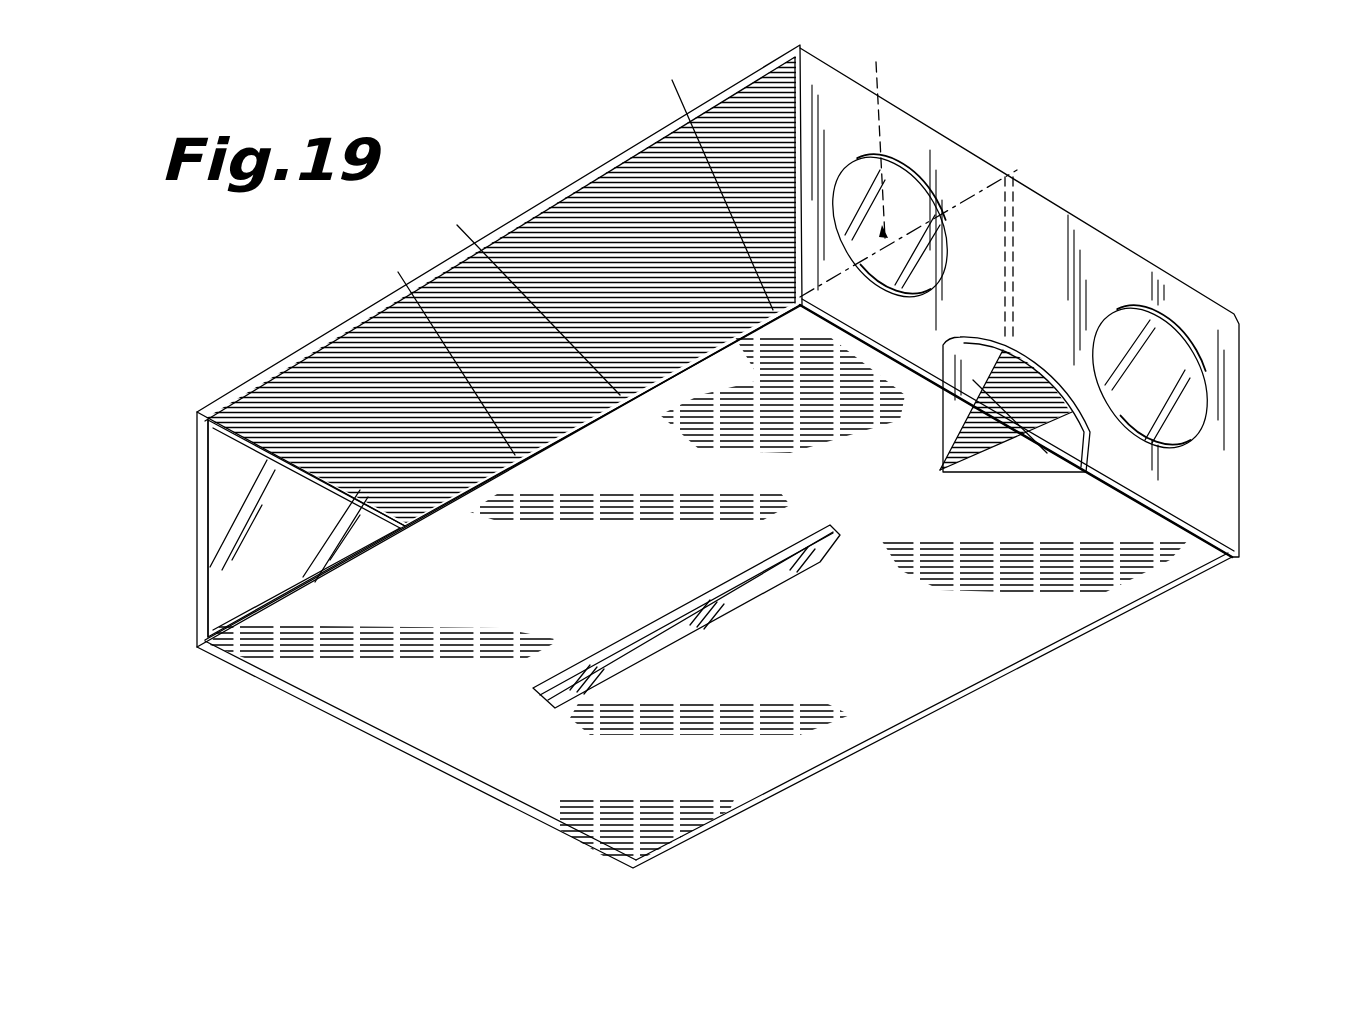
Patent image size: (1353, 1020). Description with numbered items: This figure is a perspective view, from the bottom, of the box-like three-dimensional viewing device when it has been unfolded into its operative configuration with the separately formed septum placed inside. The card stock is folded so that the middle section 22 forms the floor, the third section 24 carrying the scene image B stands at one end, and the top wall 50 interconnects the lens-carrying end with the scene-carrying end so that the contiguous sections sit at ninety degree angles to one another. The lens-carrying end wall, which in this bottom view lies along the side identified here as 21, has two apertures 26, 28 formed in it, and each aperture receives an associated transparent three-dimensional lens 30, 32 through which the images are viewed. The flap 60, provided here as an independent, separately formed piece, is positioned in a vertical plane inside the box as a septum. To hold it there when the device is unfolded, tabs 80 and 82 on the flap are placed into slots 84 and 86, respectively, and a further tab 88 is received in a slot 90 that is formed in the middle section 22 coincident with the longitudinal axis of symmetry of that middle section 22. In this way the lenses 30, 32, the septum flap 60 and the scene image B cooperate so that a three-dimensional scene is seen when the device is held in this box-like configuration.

The side wall 21 is at (1225, 423).
The middle section 22 is at (990, 647).
The third section 24 is at (197, 540).
The aperture 26 is at (900, 237).
The aperture 28 is at (1175, 330).
The 3-D lens 30 is at (893, 185).
The 3-D lens 32 is at (1167, 378).
The top wall 50 is at (625, 160).
The flap 60 is at (867, 259).
The tab 80 is at (943, 200).
The tab 82 is at (440, 353).
The slot 84 is at (876, 136).
The slot 86 is at (524, 298).
The tab 88 is at (678, 622).
The slot 90 is at (620, 642).
The image B is at (233, 573).